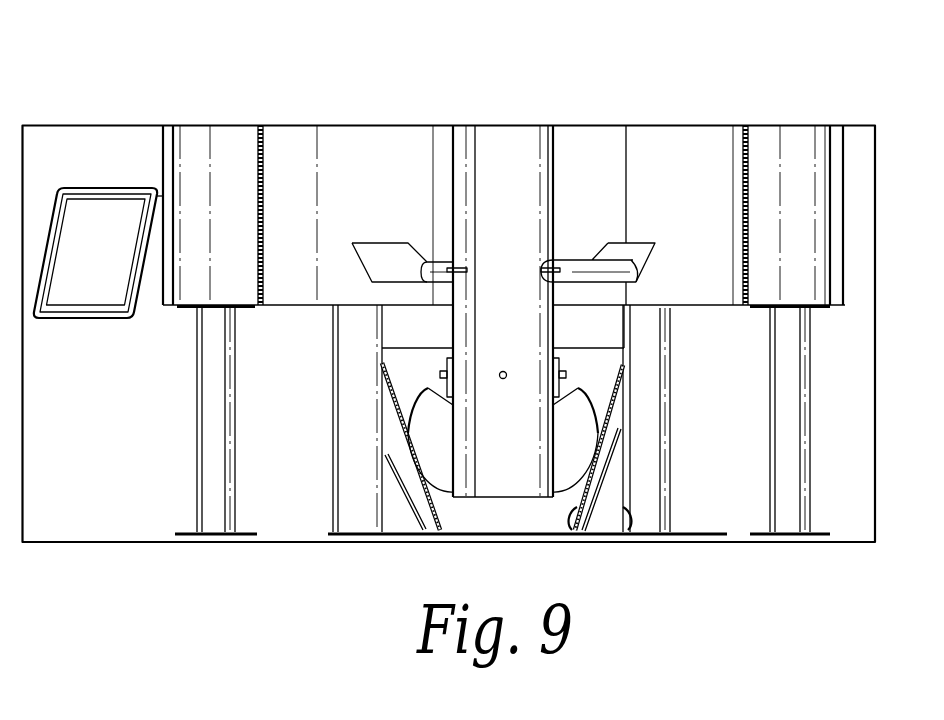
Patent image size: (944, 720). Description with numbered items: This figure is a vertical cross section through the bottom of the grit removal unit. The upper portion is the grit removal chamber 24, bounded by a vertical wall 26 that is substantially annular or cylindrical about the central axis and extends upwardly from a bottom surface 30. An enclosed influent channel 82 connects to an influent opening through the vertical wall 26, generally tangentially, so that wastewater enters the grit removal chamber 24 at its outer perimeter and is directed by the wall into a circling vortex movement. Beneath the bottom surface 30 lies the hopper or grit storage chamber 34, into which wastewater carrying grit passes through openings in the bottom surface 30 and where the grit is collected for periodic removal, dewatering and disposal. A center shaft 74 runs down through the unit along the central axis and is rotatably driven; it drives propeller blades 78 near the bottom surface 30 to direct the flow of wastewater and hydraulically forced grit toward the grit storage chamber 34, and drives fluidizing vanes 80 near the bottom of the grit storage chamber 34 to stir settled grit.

The grit removal chamber 24 is at (698, 155).
The vertical wall 26 is at (787, 150).
The bottom surface 30 is at (296, 305).
The grit storage chamber 34 is at (593, 387).
The center shaft 74 is at (543, 212).
The propeller blades 78 is at (382, 262).
The fluidizing vanes 80 is at (438, 440).
The influent channel 82 is at (88, 226).